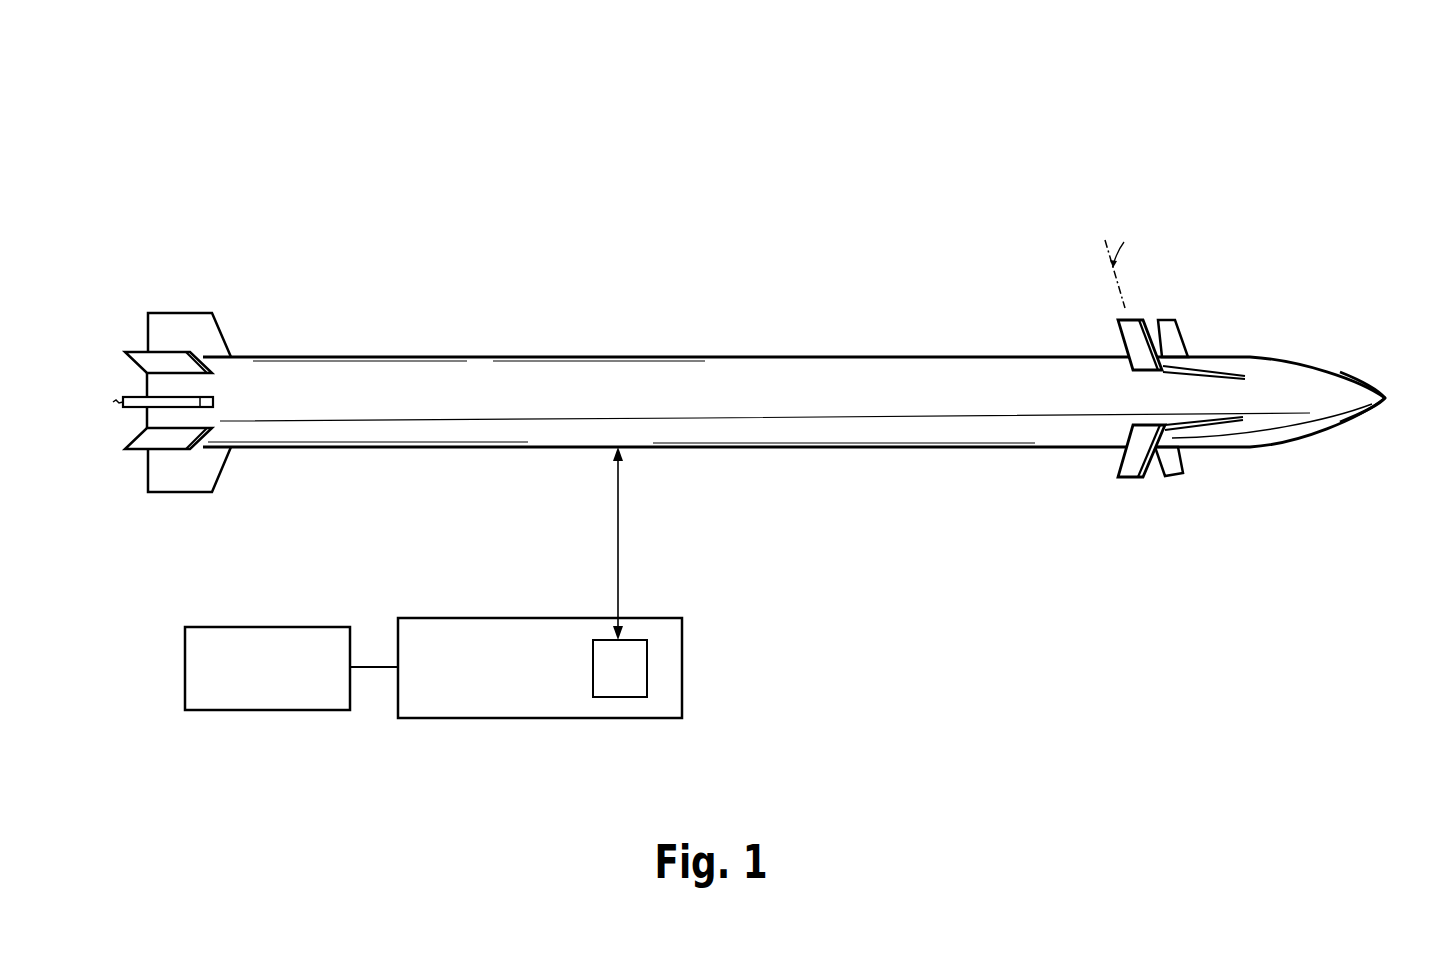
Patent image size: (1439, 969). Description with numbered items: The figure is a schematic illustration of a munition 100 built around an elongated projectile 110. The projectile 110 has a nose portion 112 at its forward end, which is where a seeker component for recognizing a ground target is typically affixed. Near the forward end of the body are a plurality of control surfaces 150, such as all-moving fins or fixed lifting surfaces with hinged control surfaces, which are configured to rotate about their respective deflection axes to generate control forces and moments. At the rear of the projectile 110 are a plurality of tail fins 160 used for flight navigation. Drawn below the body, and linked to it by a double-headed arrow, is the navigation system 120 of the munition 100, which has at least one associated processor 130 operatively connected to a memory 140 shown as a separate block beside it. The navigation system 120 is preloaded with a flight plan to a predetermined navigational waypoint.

The munition 100 is at (411, 148).
The projectile 110 is at (670, 357).
The nose portion 112 is at (1388, 398).
The navigation system 120 is at (446, 720).
The processor 130 is at (604, 679).
The memory 140 is at (240, 712).
The control surfaces 150 is at (1180, 320).
The tail fins 160 is at (213, 312).